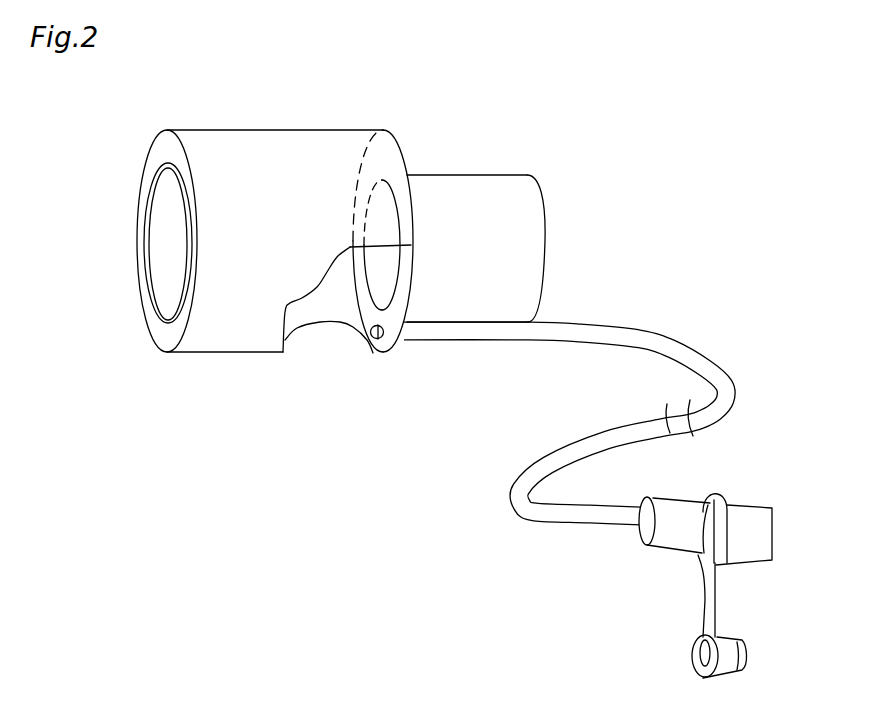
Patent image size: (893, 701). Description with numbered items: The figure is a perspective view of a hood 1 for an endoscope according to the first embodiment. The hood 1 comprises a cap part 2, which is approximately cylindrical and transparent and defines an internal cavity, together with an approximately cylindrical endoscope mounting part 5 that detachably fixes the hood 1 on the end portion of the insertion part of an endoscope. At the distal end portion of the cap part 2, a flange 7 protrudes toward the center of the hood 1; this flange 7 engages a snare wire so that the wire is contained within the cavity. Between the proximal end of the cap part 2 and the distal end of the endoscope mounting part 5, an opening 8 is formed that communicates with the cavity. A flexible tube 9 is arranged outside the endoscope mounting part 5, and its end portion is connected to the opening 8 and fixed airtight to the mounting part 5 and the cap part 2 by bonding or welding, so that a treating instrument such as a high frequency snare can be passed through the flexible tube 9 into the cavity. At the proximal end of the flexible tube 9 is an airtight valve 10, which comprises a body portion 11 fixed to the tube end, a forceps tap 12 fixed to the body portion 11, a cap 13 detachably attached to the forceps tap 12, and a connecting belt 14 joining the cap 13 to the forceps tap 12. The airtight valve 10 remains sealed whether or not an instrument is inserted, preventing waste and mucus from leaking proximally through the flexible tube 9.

The hood for an endoscope 1 is at (322, 107).
The cap part 2 is at (200, 140).
The endoscope mounting part 5 is at (472, 192).
The flange 7 is at (137, 253).
The opening 8 is at (373, 352).
The flexible tube 9 is at (647, 323).
The airtight valve 10 is at (667, 587).
The body portion 11 is at (678, 513).
The forceps tap 12 is at (753, 515).
The cap 13 is at (735, 633).
The connecting belt 14 is at (715, 595).